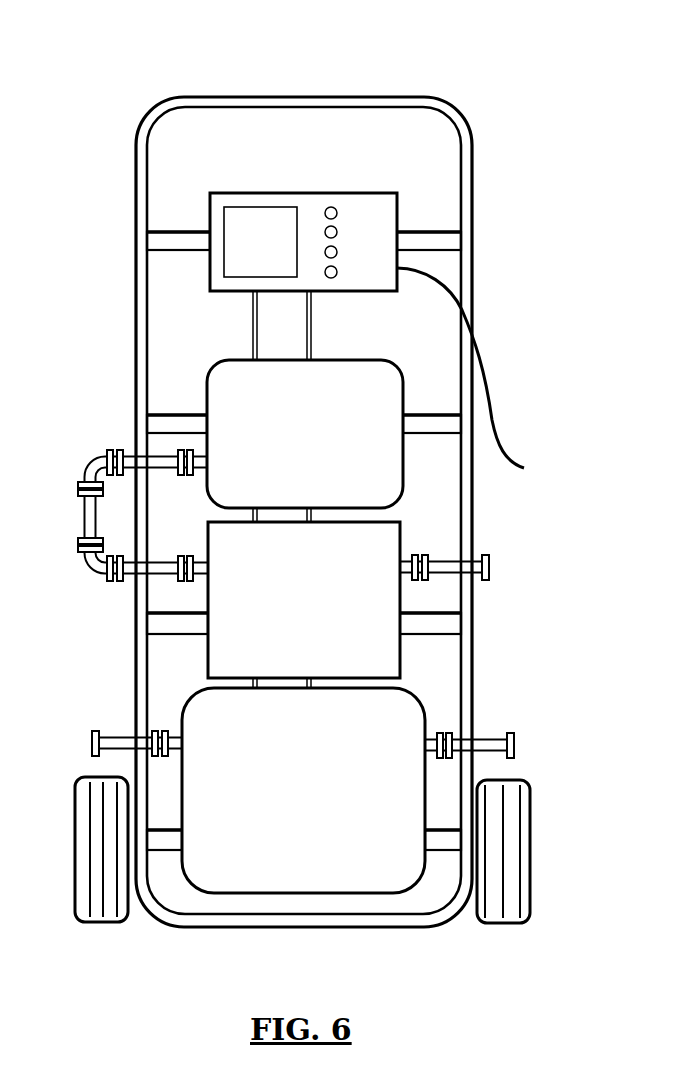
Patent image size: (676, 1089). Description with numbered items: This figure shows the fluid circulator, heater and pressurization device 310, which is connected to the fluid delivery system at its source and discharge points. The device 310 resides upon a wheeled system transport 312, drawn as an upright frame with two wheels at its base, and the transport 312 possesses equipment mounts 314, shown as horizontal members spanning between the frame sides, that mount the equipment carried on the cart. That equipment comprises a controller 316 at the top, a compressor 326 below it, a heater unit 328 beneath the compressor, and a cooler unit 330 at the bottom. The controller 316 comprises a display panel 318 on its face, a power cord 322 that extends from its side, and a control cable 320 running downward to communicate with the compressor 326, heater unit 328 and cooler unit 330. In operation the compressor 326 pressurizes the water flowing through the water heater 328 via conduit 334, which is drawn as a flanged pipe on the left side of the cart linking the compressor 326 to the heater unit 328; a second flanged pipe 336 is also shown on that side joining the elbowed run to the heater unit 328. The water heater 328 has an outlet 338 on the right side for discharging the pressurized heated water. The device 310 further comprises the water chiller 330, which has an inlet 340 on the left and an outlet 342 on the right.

The fluid circulator, heater and pressurization device 310 is at (112, 115).
The wheeled system transport 312 is at (268, 98).
The equipment mounts 314 is at (174, 246).
The controller 316 is at (378, 193).
The display panel 318 is at (262, 228).
The control cable 320 is at (309, 338).
The power cord 322 is at (487, 370).
The compressor 326 is at (212, 492).
The heater unit 328 is at (210, 672).
The cooler unit 330 is at (199, 877).
The conduit 334 is at (114, 450).
The connecting pipe 336 is at (133, 582).
The outlet 338 is at (491, 565).
The inlet 340 is at (125, 738).
The outlet 342 is at (482, 738).